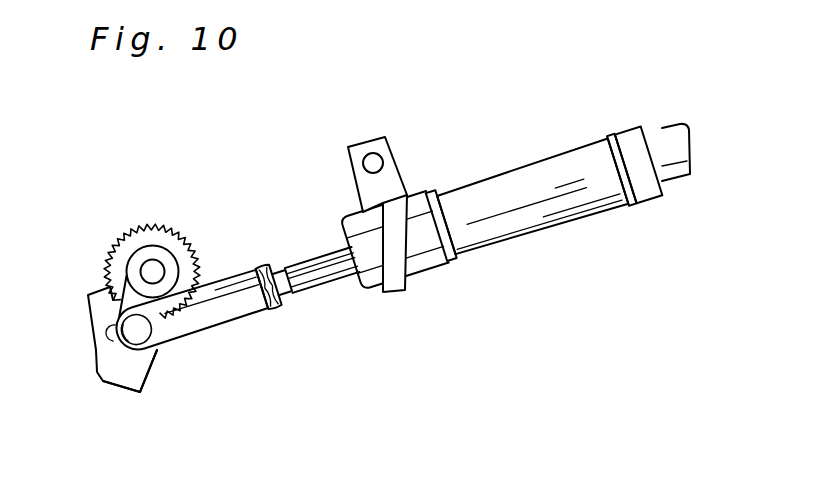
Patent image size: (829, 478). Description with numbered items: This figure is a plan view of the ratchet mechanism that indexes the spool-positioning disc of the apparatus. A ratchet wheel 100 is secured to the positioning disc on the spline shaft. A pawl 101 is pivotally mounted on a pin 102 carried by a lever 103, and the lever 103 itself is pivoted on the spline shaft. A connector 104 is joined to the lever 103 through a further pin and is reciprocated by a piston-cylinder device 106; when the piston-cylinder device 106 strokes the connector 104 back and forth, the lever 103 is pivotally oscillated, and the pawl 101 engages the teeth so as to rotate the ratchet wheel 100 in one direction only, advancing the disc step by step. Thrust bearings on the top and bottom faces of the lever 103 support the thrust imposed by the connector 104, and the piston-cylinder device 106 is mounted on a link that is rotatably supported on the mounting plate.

The ratchet wheel 100 is at (158, 228).
The pawl 101 is at (98, 312).
The pin 102 is at (116, 337).
The lever 103 is at (147, 380).
The connector 104 is at (250, 308).
The piston-cylinder device 106 is at (540, 218).